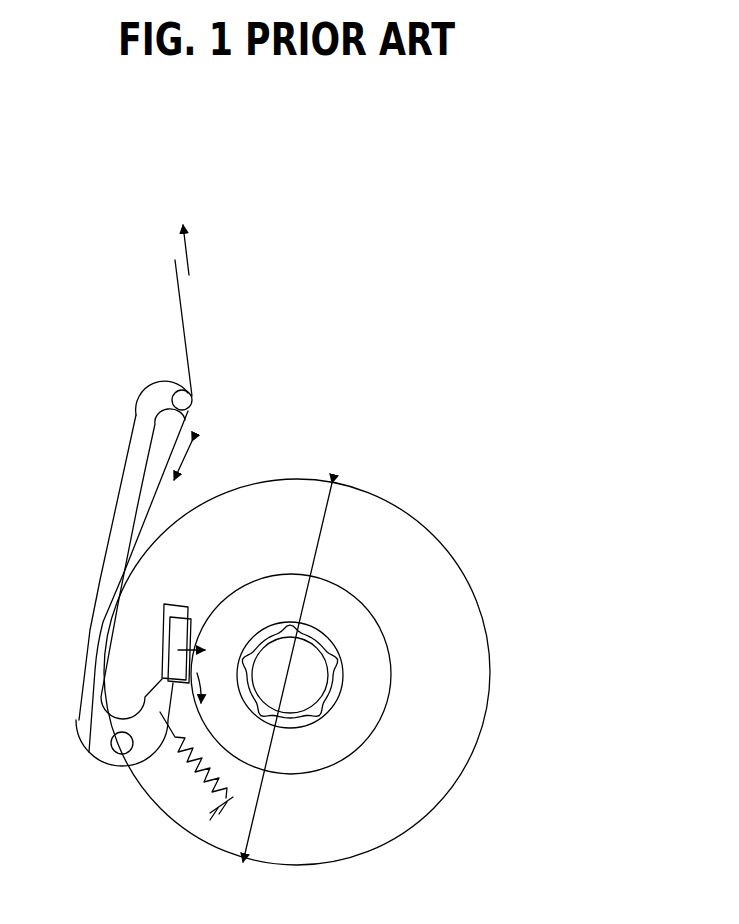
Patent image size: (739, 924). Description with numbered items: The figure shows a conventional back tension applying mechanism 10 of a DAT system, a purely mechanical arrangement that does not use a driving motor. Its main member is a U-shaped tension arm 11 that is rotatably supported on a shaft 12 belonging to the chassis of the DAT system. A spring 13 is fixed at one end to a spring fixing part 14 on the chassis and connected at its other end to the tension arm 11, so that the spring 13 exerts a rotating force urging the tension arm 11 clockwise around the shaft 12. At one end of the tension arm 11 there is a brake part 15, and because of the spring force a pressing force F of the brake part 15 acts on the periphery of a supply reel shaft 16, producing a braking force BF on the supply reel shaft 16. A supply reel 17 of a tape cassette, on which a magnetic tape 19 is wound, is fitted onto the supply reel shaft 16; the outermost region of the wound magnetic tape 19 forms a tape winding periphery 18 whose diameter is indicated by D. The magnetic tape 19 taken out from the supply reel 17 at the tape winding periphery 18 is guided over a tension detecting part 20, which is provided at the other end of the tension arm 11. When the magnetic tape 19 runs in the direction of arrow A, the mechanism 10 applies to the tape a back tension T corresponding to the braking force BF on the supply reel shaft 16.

The back tension applying mechanism 10 is at (440, 238).
The tension arm 11 is at (113, 505).
The shaft 12 is at (117, 752).
The spring 13 is at (190, 783).
The spring fixing part 14 is at (217, 812).
The brake part 15 is at (186, 605).
The supply reel shaft 16 is at (375, 708).
The supply reel 17 is at (332, 650).
The tape winding periphery 18 is at (442, 795).
The magnetic tape 19 is at (187, 342).
The tension detecting part 20 is at (183, 387).